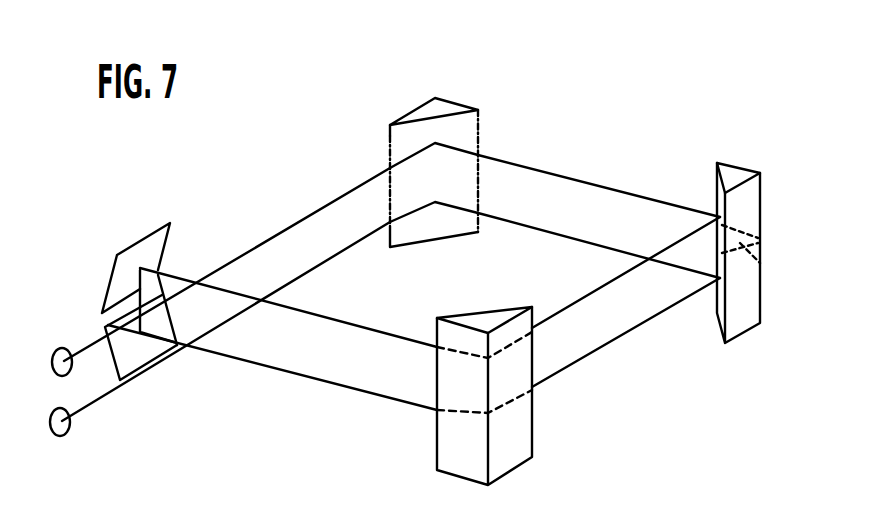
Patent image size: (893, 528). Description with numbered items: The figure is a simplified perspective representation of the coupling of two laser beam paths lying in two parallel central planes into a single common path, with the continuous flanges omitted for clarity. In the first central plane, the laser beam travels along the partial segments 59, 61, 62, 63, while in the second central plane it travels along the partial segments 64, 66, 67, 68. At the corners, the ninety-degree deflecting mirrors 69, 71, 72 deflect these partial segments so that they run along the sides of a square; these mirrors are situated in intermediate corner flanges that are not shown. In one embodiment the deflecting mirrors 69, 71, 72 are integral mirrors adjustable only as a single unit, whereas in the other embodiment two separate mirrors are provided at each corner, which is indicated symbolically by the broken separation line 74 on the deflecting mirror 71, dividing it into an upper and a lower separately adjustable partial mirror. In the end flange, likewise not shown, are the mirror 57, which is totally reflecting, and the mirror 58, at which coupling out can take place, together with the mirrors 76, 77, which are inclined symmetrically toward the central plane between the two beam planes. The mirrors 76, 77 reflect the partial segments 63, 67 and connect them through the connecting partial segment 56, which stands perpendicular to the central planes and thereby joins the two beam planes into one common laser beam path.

The partial segment 56 is at (138, 278).
The mirror 57 is at (58, 347).
The mirror 58 is at (68, 430).
The partial segment 59 is at (362, 180).
The partial segment 61 is at (557, 150).
The partial segment 62 is at (597, 290).
The partial segment 63 is at (358, 323).
The partial segment 64 is at (627, 157).
The partial segment 66 is at (630, 337).
The partial segment 67 is at (313, 380).
The partial segment 68 is at (333, 260).
The 90 degree deflecting mirror 69 is at (452, 104).
The 90 degree deflecting mirror 71 is at (737, 173).
The 90 degree deflecting mirror 72 is at (523, 410).
The broken separation line 74 is at (770, 265).
The mirror 76 is at (165, 243).
The mirror 77 is at (135, 360).